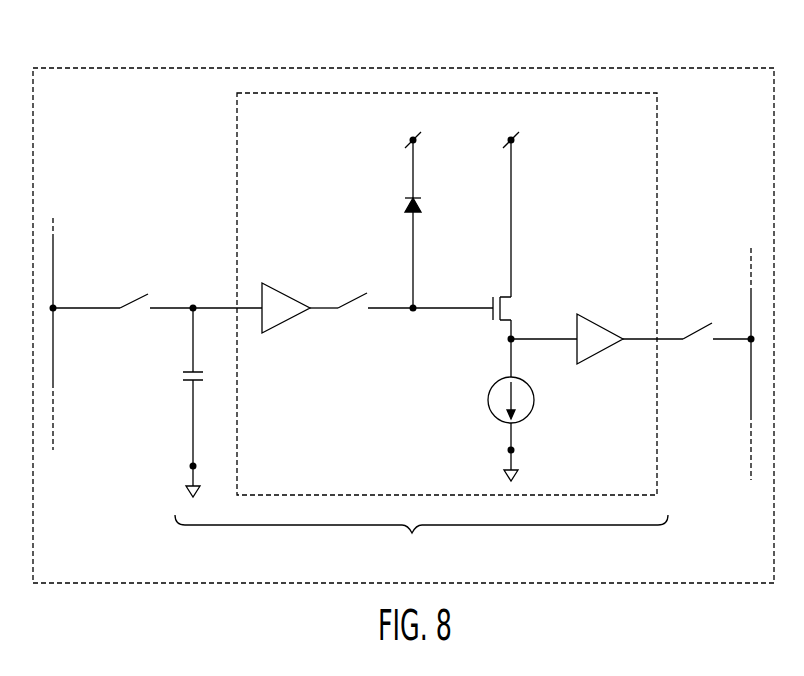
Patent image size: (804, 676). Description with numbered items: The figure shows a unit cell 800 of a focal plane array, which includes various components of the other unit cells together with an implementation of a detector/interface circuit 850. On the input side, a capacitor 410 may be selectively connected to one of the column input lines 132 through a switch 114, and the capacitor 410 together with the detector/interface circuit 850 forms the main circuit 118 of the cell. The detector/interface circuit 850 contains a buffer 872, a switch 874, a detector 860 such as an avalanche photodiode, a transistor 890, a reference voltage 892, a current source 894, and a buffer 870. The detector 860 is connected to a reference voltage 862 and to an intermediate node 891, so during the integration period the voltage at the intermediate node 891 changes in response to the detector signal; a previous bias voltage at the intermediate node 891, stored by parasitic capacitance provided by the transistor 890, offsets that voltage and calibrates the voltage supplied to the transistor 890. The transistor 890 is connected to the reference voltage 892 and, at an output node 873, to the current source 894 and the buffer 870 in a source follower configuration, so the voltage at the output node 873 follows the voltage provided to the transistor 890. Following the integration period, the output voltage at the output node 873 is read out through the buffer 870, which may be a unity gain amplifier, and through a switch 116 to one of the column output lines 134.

The unit cell 800 is at (672, 67).
The detector/interface circuit 850 is at (362, 466).
The main circuit 118 is at (421, 538).
The column input line 132 is at (57, 418).
The column output line 134 is at (749, 455).
The switch 114 is at (130, 292).
The switch 874 is at (350, 292).
The switch 116 is at (694, 320).
The capacitor 410 is at (181, 377).
The buffer 872 is at (284, 291).
The buffer 870 is at (598, 317).
The intermediate node 891 is at (413, 316).
The detector 860 is at (403, 205).
The reference voltage 862 is at (404, 142).
The reference voltage 892 is at (520, 142).
The transistor 890 is at (512, 310).
The output node 873 is at (506, 340).
The current source 894 is at (535, 402).